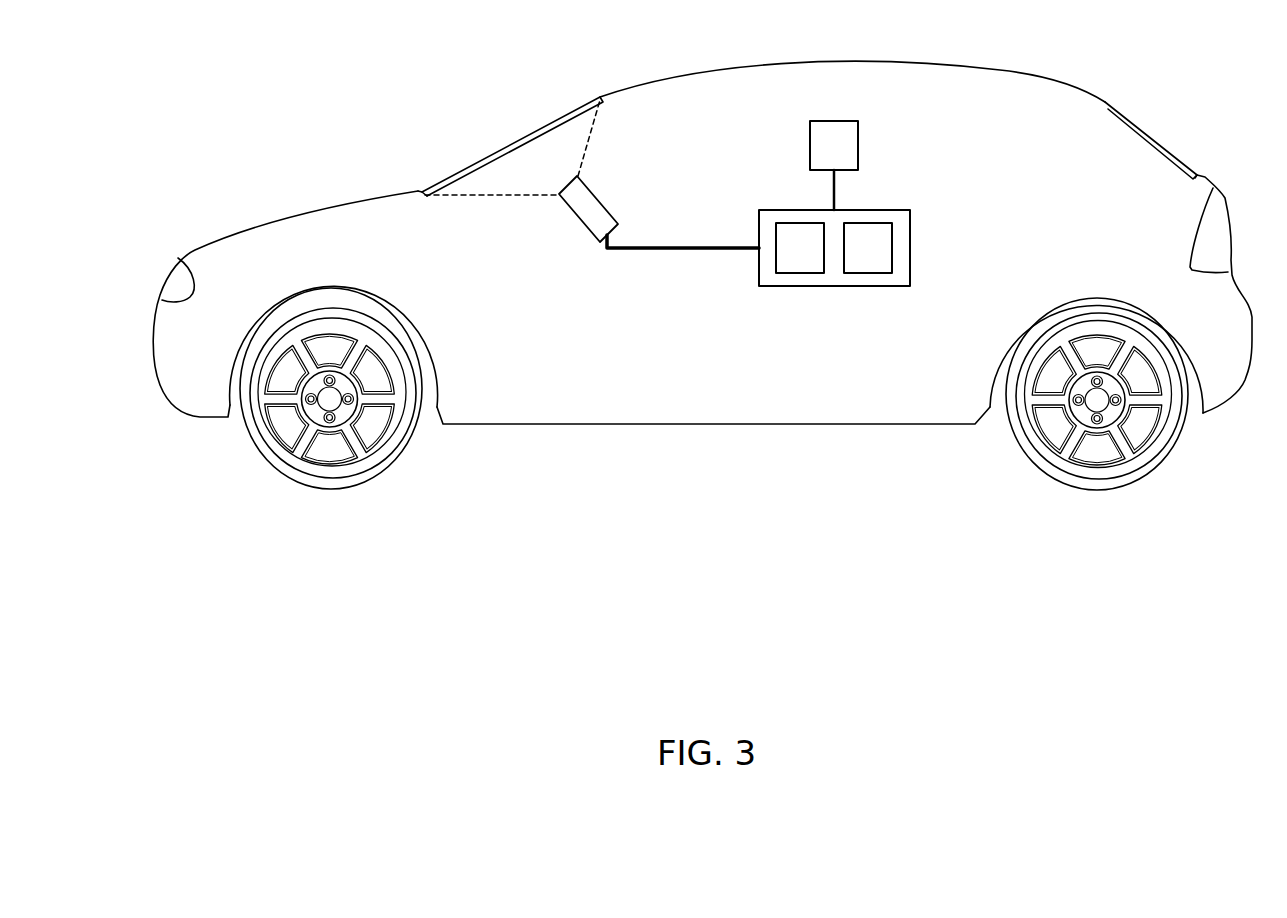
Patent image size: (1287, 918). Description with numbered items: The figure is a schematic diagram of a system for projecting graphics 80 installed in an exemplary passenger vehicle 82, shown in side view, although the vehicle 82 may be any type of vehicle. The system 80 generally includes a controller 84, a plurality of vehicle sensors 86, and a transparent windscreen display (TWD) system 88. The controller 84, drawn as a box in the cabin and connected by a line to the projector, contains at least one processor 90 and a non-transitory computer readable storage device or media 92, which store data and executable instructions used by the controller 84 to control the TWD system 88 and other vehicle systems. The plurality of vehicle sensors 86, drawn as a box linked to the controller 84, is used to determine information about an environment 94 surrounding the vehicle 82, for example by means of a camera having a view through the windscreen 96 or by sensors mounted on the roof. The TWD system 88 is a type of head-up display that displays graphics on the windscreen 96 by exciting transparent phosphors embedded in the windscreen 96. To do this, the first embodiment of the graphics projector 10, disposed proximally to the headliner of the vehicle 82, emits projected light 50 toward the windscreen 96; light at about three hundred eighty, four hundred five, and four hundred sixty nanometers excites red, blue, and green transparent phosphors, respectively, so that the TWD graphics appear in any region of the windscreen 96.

The graphics projector 10 is at (580, 223).
The projected light 50 is at (492, 195).
The system for projecting graphics 80 is at (468, 142).
The vehicle 82 is at (1020, 73).
The controller 84 is at (910, 283).
The plurality of vehicle sensors 86 is at (819, 157).
The transparent windscreen display (TWD) system 88 is at (632, 148).
The processor 90 is at (785, 260).
The non-transitory computer readable storage device or media 92 is at (853, 260).
The environment 94 is at (262, 103).
The windscreen 96 is at (548, 122).